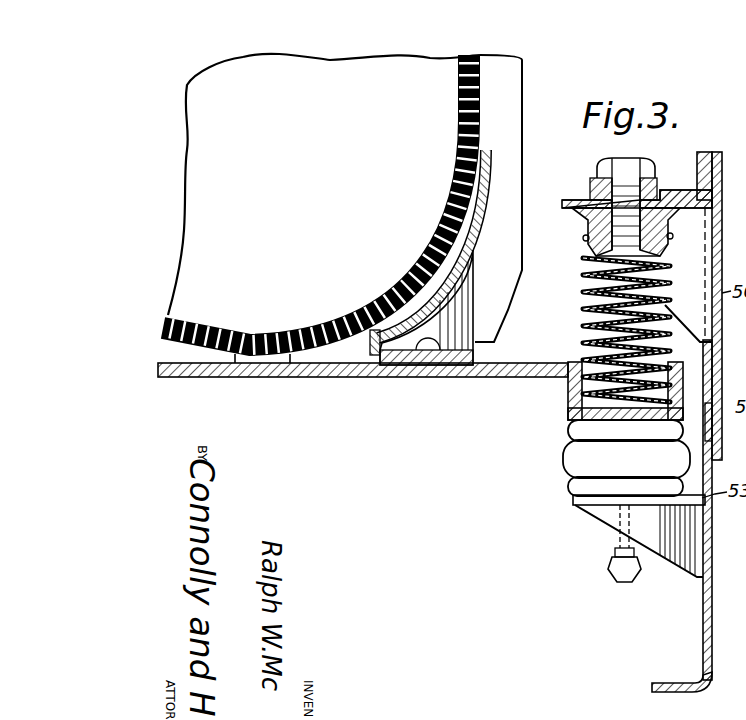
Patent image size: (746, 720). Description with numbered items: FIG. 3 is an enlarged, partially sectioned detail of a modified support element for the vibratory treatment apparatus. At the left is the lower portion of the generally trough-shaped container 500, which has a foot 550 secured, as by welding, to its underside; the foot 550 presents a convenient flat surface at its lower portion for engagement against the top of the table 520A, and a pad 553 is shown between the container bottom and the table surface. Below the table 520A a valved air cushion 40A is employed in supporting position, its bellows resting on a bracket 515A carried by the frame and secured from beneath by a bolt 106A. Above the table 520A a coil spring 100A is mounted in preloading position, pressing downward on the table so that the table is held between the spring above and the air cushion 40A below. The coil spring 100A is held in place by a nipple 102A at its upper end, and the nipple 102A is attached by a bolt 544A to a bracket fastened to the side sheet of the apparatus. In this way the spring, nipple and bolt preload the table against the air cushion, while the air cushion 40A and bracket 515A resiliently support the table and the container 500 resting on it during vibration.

The container 500 is at (488, 80).
The foot 550 is at (430, 318).
The table 520A is at (378, 371).
The pad 553 is at (262, 368).
The bolt and nut 544A is at (596, 190).
The nipple 102A is at (590, 251).
The coil spring 100A is at (590, 302).
The valved air cushion 40A is at (582, 458).
The bracket 515A is at (667, 556).
The bolt 106A is at (610, 570).